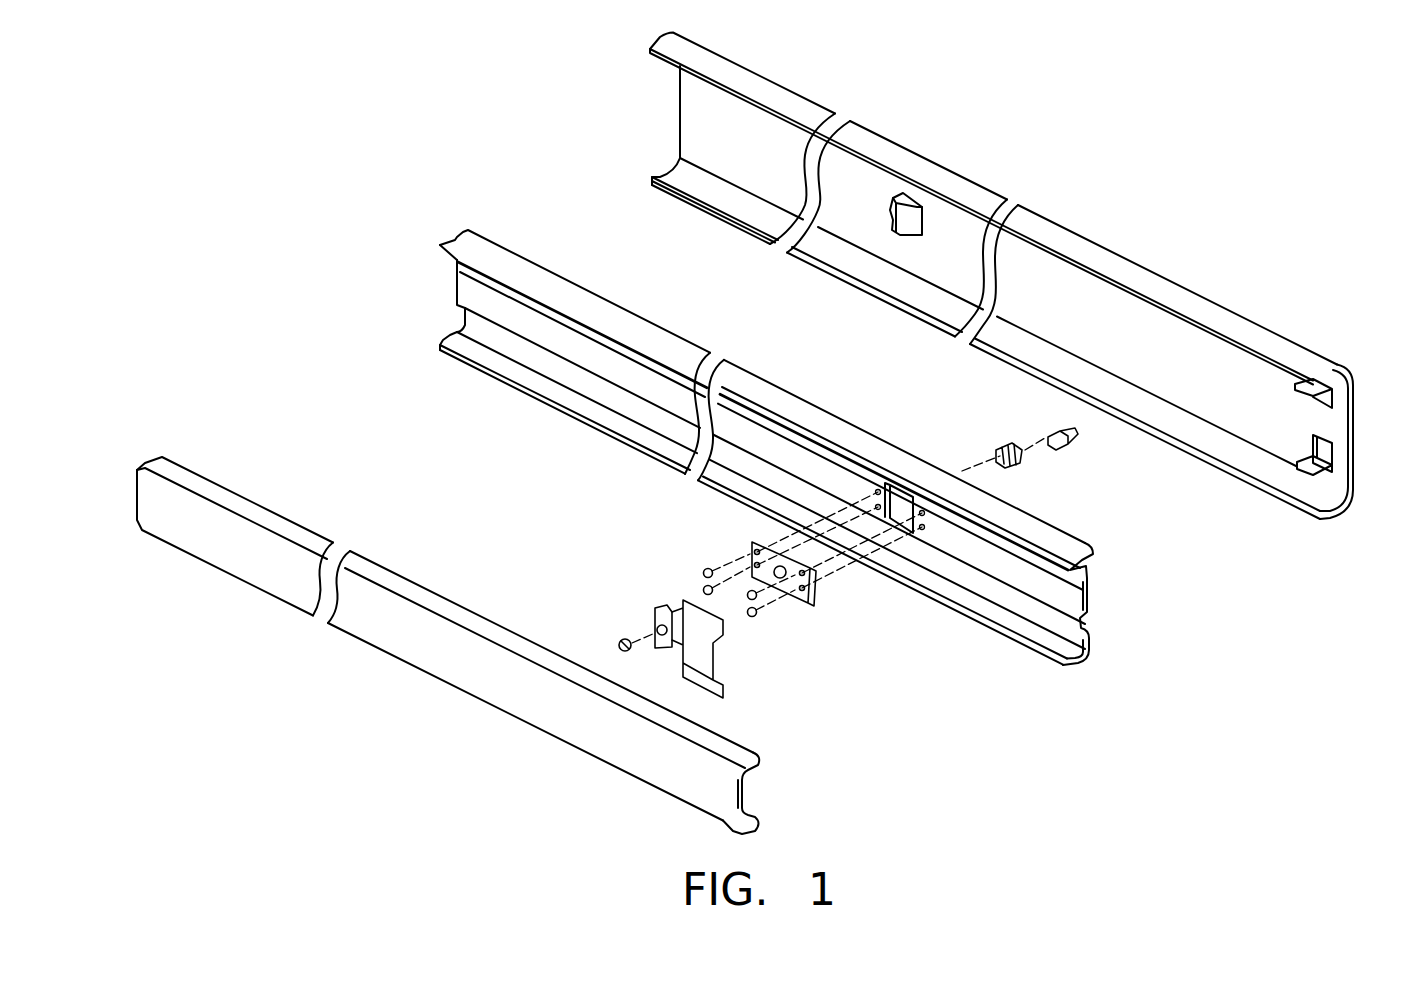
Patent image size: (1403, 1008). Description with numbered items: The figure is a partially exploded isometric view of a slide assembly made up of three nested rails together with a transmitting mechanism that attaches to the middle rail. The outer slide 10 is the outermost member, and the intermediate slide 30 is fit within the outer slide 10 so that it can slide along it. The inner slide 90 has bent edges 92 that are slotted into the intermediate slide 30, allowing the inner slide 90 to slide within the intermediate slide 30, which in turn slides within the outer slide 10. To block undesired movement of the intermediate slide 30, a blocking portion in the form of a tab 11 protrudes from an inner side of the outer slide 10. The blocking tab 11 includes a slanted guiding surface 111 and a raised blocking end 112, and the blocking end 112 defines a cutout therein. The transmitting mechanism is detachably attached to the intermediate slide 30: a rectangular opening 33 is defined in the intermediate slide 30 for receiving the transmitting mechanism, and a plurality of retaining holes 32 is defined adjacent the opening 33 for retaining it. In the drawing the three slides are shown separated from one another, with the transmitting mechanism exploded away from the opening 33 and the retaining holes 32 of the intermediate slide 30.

The outer slide 10 is at (1235, 300).
The blocking tab 11 is at (1008, 95).
The slanted guiding surface 111 is at (915, 215).
The raised blocking end 112 is at (891, 212).
The intermediate slide 30 is at (1105, 593).
The retaining holes 32 is at (878, 489).
The rectangular opening 33 is at (895, 496).
The inner slide 90 is at (387, 557).
The bent edges 92 is at (748, 752).